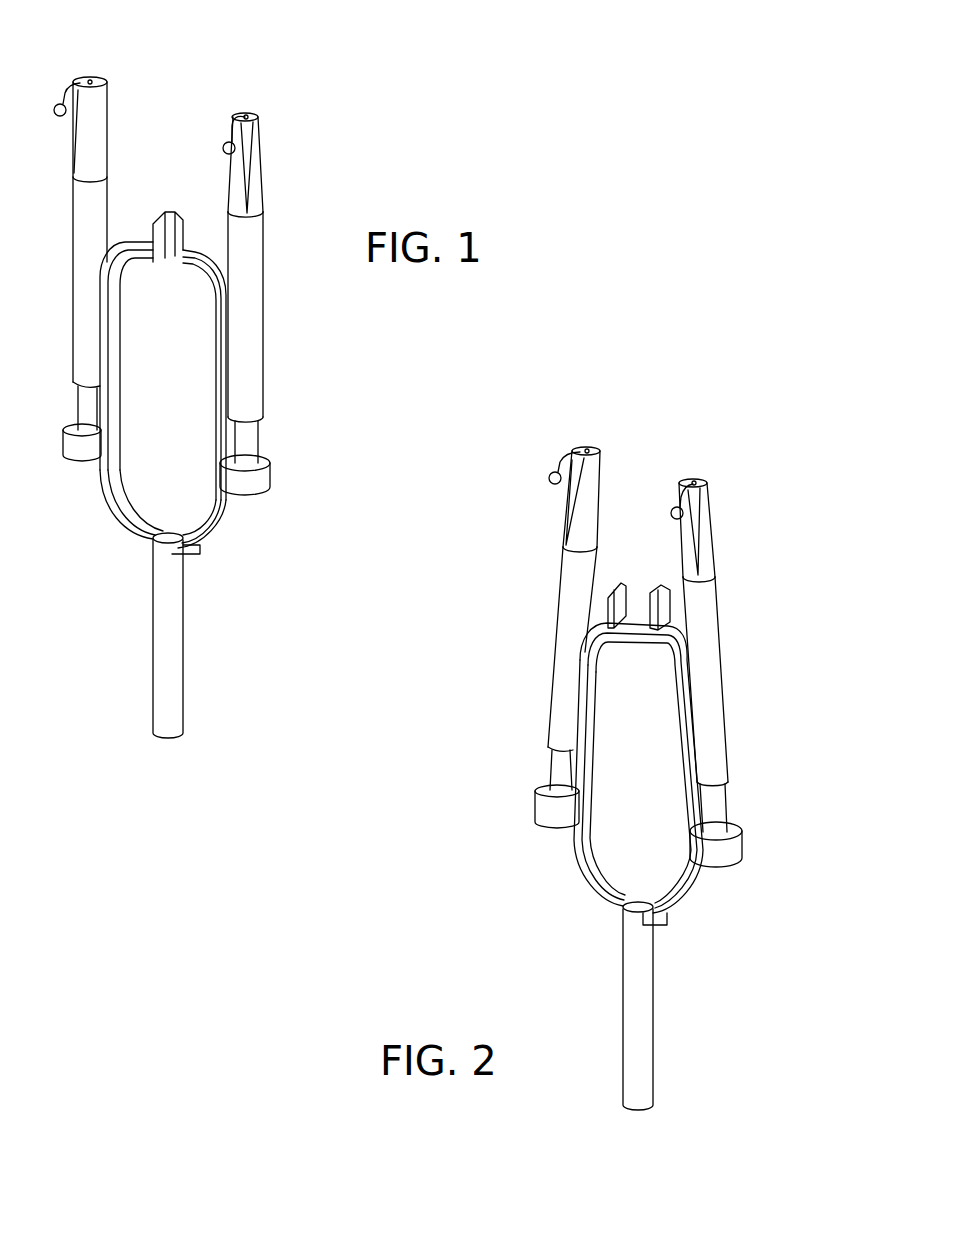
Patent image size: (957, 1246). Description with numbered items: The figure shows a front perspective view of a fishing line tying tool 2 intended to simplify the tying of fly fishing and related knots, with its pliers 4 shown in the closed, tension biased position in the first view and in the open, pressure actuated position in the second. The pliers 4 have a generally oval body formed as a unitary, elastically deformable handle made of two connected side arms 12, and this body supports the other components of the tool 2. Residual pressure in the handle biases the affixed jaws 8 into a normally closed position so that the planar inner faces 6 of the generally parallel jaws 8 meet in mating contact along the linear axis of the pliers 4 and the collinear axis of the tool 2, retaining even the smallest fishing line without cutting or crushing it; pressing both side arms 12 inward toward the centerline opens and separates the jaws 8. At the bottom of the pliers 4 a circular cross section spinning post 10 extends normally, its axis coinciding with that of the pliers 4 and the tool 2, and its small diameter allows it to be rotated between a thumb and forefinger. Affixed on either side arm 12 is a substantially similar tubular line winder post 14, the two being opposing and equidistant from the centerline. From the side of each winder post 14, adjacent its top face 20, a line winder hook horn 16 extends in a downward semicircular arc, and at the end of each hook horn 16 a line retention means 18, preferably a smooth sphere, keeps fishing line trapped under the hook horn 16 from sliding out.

In FIG. 1, the tool 2 is at (202, 402).
In FIG. 1, the pliers 4 is at (193, 255).
In FIG. 2, the inner faces 6 is at (622, 602).
In FIG. 1, the jaws 8 is at (175, 217).
In FIG. 2, the spinning post 10 is at (655, 1010).
In FIG. 1, the side arms 12 is at (198, 514).
In FIG. 2, the side arms 12 is at (612, 870).
In FIG. 1, the line winder post 14 is at (258, 314).
In FIG. 2, the line winder post 14 is at (560, 665).
In FIG. 2, the line winder hook horn 16 is at (698, 522).
In FIG. 2, the line retention means 18 is at (555, 483).
In FIG. 1, the top face 20 is at (250, 115).